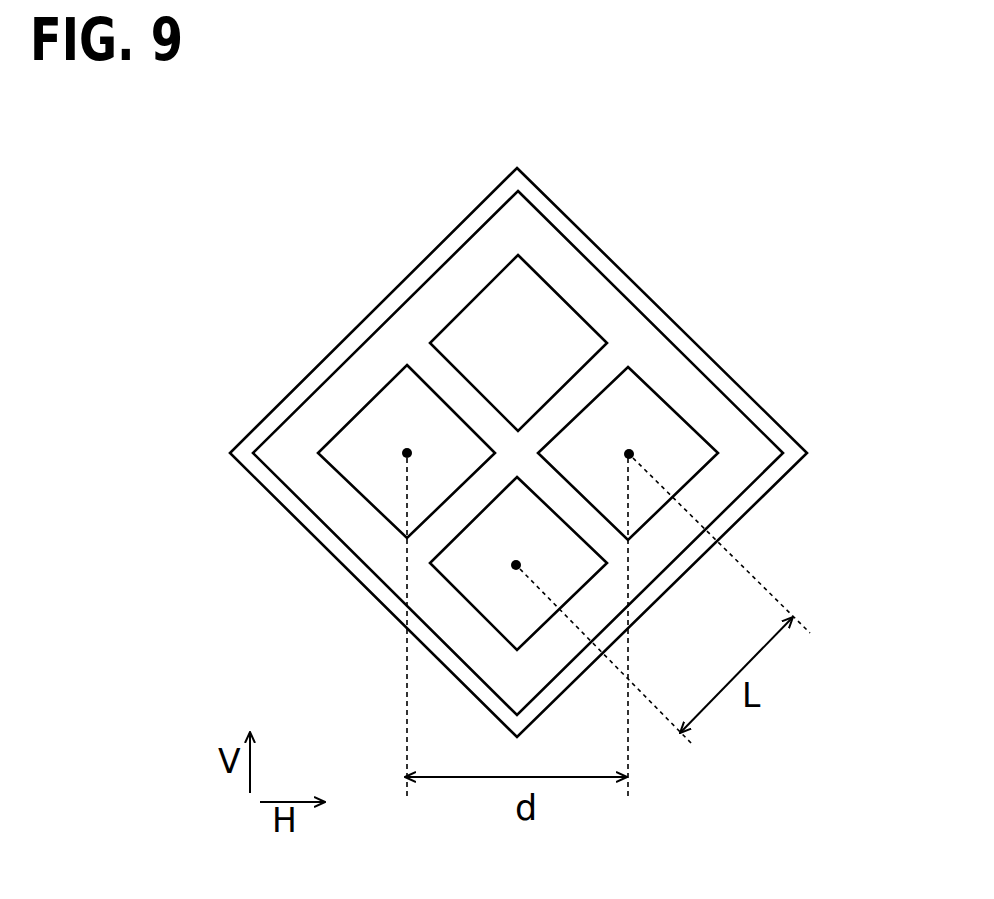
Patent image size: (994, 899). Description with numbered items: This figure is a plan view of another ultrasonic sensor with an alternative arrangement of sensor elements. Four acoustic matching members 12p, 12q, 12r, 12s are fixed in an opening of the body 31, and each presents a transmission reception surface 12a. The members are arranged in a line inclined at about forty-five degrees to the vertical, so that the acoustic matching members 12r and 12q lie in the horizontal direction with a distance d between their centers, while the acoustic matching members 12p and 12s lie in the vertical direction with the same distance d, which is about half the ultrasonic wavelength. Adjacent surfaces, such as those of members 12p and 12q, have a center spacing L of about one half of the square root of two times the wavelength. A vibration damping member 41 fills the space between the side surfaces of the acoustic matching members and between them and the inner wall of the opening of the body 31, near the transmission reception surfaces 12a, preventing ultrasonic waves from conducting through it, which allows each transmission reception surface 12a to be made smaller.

The transmission reception surface 12a is at (523, 436).
The acoustic matching member 12p is at (500, 573).
The acoustic matching member 12q is at (672, 430).
The acoustic matching member 12r is at (383, 423).
The acoustic matching member 12s is at (490, 310).
The body 31 is at (297, 512).
The vibration damping member 41 is at (580, 267).